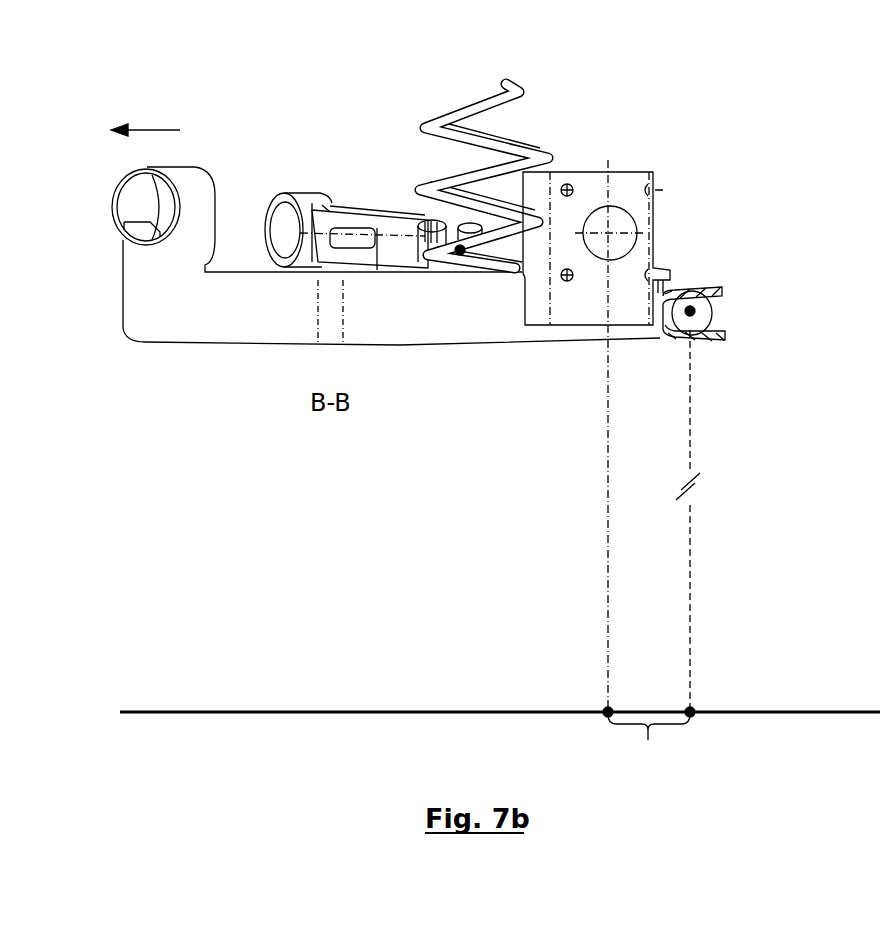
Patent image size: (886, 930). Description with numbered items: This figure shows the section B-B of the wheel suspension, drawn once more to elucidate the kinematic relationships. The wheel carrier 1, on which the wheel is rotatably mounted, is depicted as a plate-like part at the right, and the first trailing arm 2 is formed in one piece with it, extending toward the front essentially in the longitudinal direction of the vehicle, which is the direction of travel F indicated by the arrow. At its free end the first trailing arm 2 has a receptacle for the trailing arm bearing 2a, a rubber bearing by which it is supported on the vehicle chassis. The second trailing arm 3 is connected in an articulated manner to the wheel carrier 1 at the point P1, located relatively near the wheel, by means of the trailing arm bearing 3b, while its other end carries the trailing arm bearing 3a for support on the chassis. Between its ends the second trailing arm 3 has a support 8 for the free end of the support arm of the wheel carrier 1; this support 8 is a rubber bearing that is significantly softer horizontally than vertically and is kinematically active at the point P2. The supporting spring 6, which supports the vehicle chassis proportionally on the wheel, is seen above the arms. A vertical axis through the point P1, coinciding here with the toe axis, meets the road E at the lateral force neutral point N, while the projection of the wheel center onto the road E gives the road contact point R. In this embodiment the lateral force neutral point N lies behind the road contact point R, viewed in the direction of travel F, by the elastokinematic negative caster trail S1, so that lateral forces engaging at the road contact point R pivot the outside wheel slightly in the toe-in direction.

The wheel carrier 1 is at (637, 180).
The first trailing arm 2 is at (243, 326).
The trailing arm bearing 2a is at (193, 192).
The second trailing arm 3 is at (362, 210).
The trailing arm bearing 3a is at (318, 200).
The trailing arm bearing 3b is at (688, 290).
The supporting spring 6 is at (480, 103).
The support 8 is at (456, 232).
The hinge point P1 is at (690, 311).
The kinematically active point of the support P2 is at (460, 250).
The road contact point R is at (608, 714).
The lateral force neutral point N is at (695, 712).
The elastokinematic negative caster trail S1 is at (649, 744).
The road E is at (185, 708).
The direction of travel F is at (145, 110).